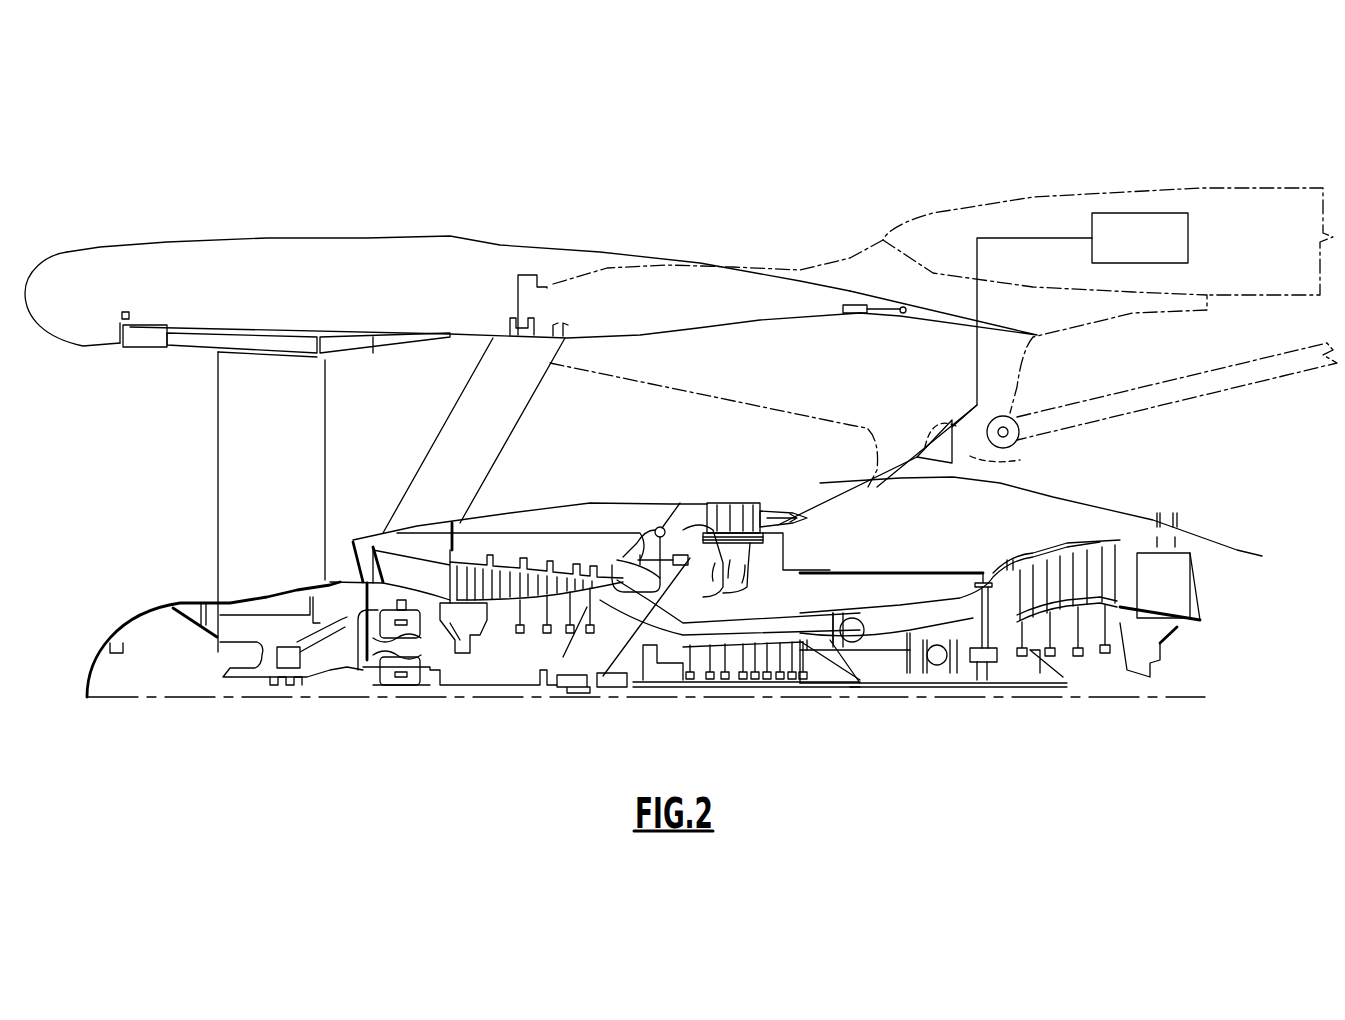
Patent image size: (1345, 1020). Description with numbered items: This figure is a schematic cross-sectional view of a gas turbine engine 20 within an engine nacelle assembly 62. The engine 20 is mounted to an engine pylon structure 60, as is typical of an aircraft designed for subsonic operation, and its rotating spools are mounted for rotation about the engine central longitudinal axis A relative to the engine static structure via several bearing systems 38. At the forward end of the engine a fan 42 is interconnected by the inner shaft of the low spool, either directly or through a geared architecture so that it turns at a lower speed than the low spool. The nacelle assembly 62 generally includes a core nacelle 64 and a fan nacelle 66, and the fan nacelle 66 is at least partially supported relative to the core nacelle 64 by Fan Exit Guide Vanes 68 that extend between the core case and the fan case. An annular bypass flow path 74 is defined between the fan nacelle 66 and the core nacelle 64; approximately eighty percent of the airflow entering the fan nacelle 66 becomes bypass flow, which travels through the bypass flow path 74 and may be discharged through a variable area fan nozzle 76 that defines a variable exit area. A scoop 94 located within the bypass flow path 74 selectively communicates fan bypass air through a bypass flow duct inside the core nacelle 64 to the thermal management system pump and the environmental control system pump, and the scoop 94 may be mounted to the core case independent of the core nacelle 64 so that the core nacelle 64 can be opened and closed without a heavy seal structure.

The gas turbine engine 20 is at (897, 169).
The engine nacelle assembly 62 is at (423, 198).
The fan nacelle 66 is at (588, 252).
The engine pylon structure 60 is at (810, 262).
The variable area fan nozzle 76 is at (922, 322).
The annular bypass flow path 74 is at (400, 431).
The Fan Exit Guide Vanes 68 is at (497, 431).
The fan 42 is at (287, 481).
The scoop 94 is at (588, 500).
The core nacelle 64 is at (1066, 497).
The bearing systems 38 is at (985, 662).
The engine central longitudinal axis A is at (1177, 697).